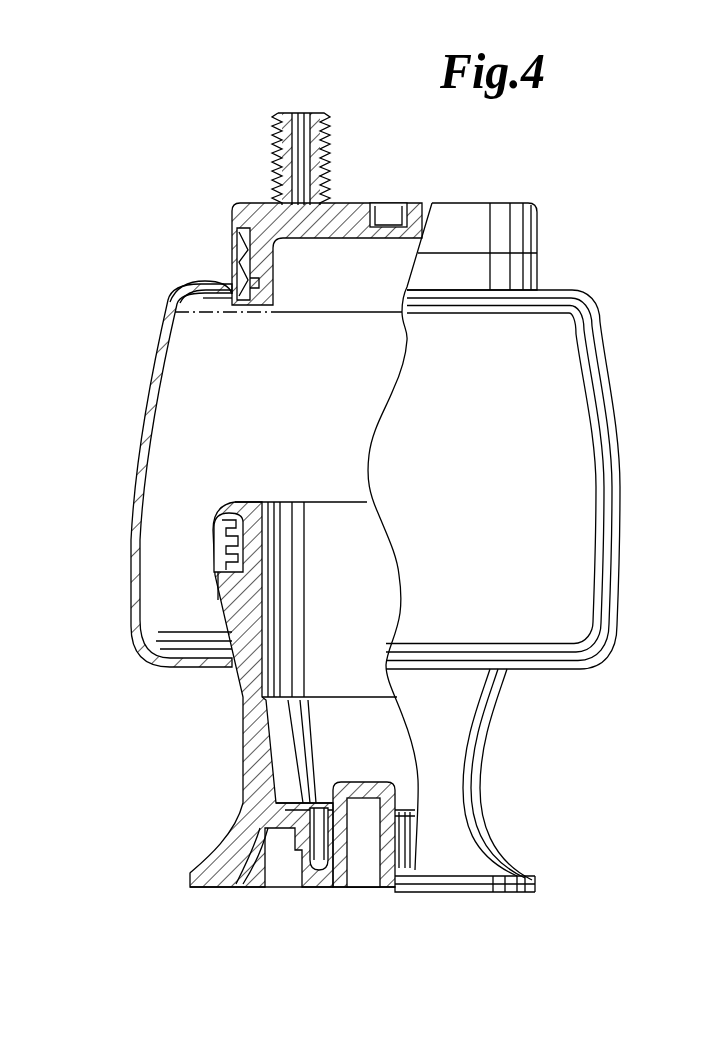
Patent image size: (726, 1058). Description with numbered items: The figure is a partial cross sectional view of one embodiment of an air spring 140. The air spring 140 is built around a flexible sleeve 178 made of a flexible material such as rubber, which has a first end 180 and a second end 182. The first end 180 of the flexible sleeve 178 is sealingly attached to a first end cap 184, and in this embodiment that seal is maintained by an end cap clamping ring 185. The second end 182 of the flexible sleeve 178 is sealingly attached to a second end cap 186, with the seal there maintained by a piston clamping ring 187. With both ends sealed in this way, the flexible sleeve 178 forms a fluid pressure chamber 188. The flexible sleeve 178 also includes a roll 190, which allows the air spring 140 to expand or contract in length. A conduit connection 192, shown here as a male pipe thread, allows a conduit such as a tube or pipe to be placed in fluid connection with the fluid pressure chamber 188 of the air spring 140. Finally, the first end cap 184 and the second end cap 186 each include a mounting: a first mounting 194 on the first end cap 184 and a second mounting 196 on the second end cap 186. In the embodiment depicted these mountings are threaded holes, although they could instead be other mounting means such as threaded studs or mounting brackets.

The air spring 140 is at (196, 203).
The flexible sleeve 178 is at (153, 380).
The first end 180 is at (170, 303).
The second end 182 is at (197, 603).
The first end cap 184 is at (500, 207).
The end cap clamping ring 185 is at (533, 277).
The second end cap 186 is at (495, 746).
The piston clamping ring 187 is at (220, 547).
The fluid pressure chamber 188 is at (220, 447).
The roll 190 is at (186, 683).
The conduit connection 192 is at (322, 155).
The first mounting 194 is at (395, 213).
The second mounting 196 is at (365, 867).